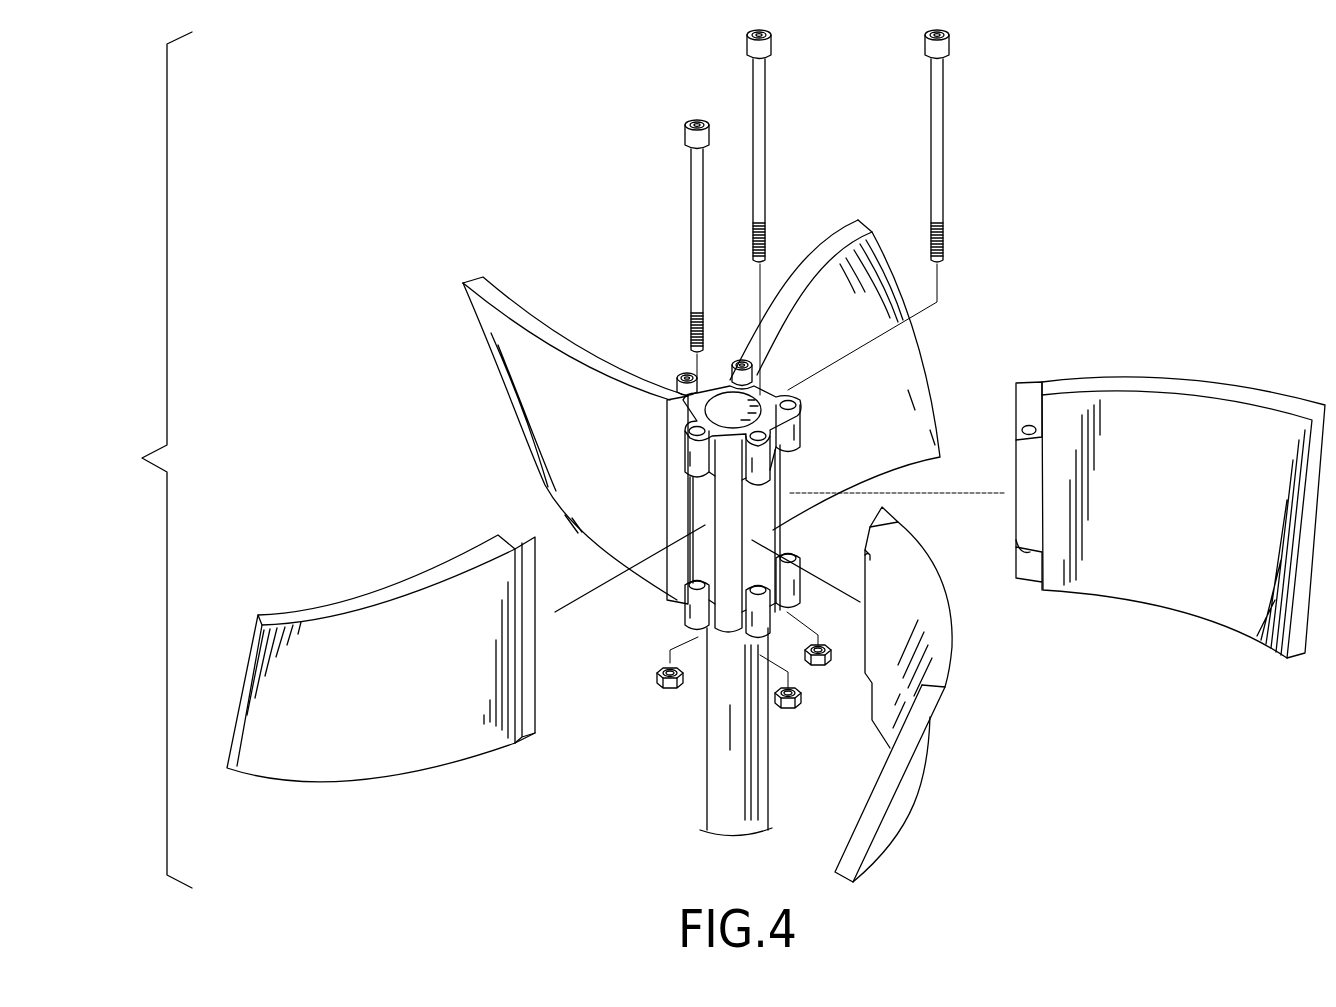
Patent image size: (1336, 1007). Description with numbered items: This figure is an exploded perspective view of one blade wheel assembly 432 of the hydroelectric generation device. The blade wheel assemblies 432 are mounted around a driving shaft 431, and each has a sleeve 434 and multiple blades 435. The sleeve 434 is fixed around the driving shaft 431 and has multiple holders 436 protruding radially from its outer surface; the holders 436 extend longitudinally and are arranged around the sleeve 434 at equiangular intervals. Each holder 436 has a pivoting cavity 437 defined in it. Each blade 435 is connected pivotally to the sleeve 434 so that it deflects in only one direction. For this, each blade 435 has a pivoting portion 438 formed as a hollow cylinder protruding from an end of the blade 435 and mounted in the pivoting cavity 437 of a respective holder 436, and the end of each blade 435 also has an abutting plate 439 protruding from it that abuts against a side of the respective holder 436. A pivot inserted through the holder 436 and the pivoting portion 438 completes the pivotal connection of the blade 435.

The driving shaft 431 is at (722, 747).
The blade wheel assembly 432 is at (445, 407).
The sleeve 434 is at (740, 499).
The blade 435 is at (1137, 493).
The holder 436 is at (690, 455).
The pivoting cavity 437 is at (695, 498).
The pivoting portion 438 is at (1028, 505).
The abutting plate 439 is at (1030, 398).